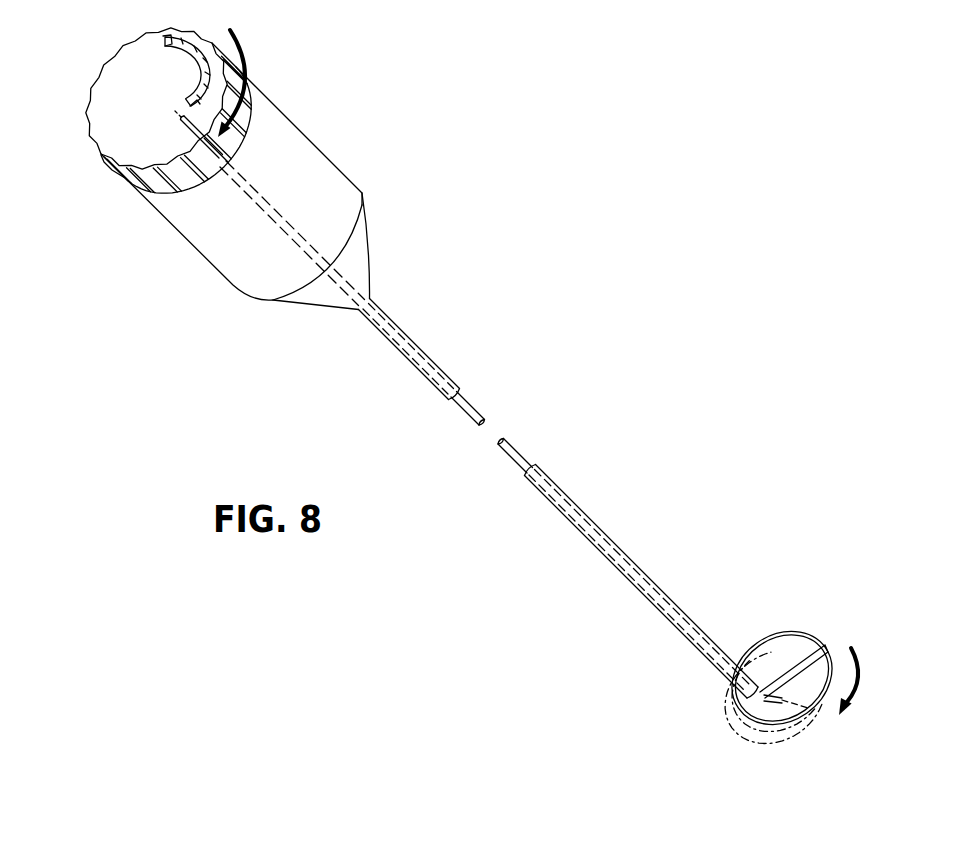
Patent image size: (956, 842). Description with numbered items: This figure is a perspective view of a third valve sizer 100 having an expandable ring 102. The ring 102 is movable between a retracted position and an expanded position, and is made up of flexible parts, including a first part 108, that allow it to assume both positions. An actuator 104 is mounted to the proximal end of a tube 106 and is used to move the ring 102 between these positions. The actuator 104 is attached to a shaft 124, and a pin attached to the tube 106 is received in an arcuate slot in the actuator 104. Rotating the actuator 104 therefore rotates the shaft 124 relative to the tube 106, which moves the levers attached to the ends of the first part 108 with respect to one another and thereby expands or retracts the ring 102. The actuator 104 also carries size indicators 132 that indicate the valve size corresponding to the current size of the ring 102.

The third valve sizer 100 is at (528, 308).
The ring 102 is at (800, 632).
The actuator 104 is at (116, 146).
The tube 106 is at (389, 341).
The first part 108 is at (757, 723).
The shaft 124 is at (514, 434).
The size indicators 132 is at (205, 38).